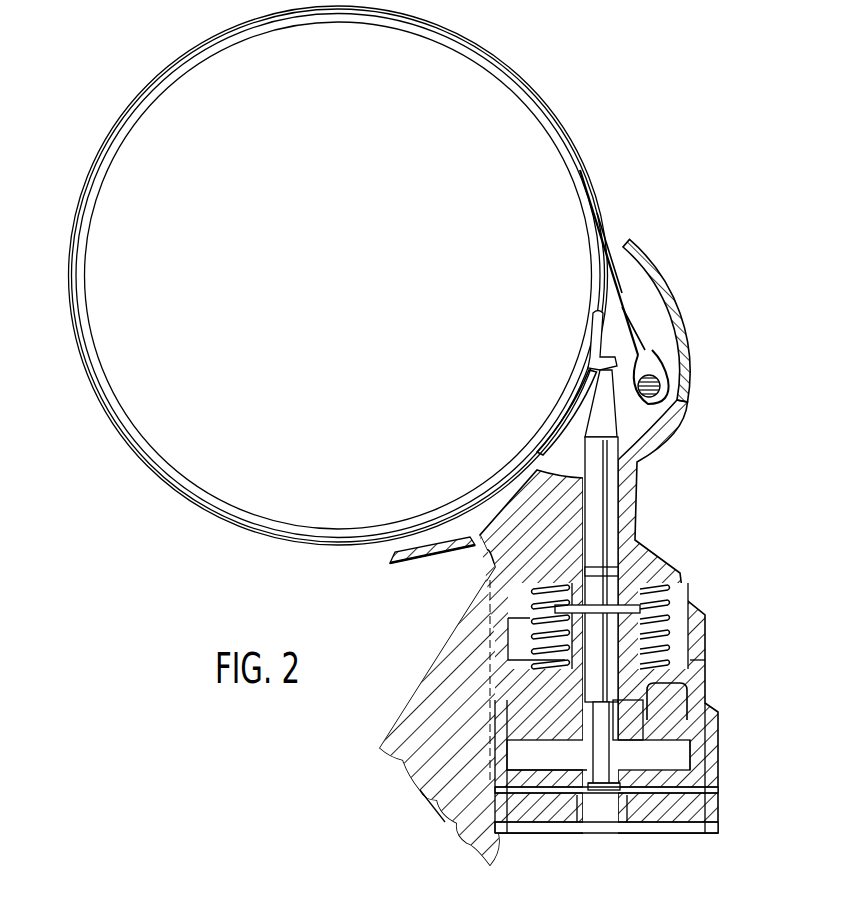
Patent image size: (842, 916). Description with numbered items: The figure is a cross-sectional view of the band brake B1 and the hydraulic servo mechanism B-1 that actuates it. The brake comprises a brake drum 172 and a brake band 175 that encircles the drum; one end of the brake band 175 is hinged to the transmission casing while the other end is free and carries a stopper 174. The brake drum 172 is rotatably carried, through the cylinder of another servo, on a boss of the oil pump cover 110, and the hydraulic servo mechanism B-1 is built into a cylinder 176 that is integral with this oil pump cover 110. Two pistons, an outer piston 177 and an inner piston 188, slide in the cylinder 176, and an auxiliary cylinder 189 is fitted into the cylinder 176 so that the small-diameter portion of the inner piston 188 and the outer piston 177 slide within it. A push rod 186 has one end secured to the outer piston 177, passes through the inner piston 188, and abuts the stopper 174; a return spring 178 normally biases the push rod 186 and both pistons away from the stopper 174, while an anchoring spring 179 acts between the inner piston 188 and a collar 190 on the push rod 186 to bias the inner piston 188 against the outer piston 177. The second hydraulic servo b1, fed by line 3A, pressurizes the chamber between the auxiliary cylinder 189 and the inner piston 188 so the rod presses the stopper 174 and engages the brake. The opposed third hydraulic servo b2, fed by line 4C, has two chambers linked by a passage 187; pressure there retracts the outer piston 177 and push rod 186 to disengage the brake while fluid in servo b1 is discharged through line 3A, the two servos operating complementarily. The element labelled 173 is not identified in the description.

The brake band 175 is at (566, 130).
The brake drum 172 is at (582, 172).
The band brake B1 is at (608, 216).
The oil pump cover 110 is at (683, 320).
The hook loop 173 is at (669, 383).
The stopper 174 is at (641, 401).
The push rod 186 is at (620, 489).
The collar 190 is at (640, 606).
The hydraulic servo mechanism B-1 is at (698, 593).
The third hydraulic servo b2 is at (684, 630).
The return spring 178 is at (673, 650).
The anchoring spring 179 is at (706, 656).
The cylinder 176 is at (688, 695).
The second hydraulic servo b1 is at (640, 716).
The passage 187 is at (685, 750).
The outer piston 177 is at (720, 818).
The inner piston 188 is at (617, 787).
The auxiliary cylinder 189 is at (540, 745).
The line 4C is at (400, 762).
The line 3A is at (437, 800).